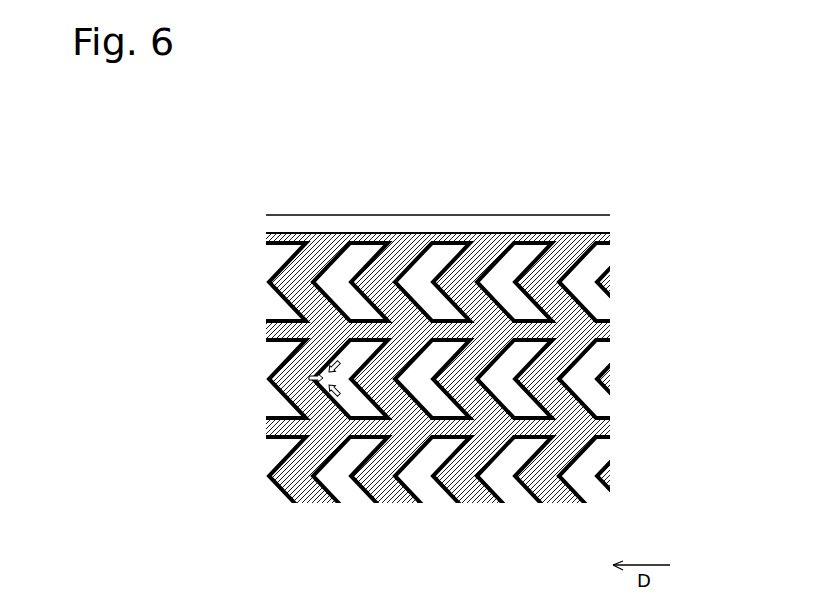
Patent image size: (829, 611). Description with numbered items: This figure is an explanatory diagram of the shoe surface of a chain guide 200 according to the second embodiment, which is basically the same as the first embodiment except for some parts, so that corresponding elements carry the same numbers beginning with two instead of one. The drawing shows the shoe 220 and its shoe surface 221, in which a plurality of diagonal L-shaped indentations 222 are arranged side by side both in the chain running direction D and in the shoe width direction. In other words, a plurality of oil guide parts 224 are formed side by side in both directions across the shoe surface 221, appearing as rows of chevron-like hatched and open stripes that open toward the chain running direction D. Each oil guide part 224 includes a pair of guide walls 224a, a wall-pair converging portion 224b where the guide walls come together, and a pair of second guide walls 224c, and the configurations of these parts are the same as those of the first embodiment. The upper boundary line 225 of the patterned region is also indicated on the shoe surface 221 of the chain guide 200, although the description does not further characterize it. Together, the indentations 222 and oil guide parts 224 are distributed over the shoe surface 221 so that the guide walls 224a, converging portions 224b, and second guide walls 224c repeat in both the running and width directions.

The chain guide 200 is at (678, 233).
The shoe 220 is at (142, 187).
The shoe surface 221 is at (456, 361).
The diagonal L-shaped indentation 222 is at (517, 360).
The oil guide part 224 is at (587, 207).
The guide wall 224a is at (423, 343).
The wall-pair converging portion 224b is at (393, 367).
The second guide wall 224c is at (460, 333).
The edge line 225 is at (332, 223).